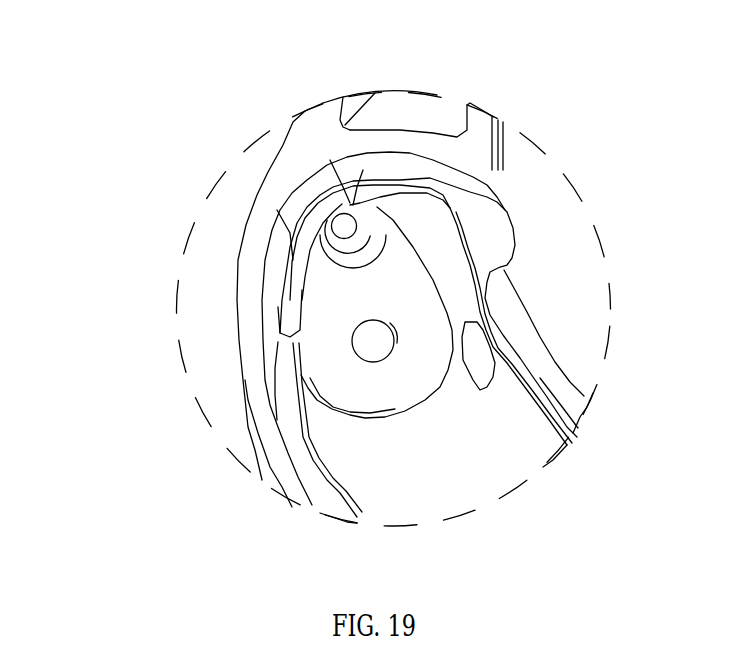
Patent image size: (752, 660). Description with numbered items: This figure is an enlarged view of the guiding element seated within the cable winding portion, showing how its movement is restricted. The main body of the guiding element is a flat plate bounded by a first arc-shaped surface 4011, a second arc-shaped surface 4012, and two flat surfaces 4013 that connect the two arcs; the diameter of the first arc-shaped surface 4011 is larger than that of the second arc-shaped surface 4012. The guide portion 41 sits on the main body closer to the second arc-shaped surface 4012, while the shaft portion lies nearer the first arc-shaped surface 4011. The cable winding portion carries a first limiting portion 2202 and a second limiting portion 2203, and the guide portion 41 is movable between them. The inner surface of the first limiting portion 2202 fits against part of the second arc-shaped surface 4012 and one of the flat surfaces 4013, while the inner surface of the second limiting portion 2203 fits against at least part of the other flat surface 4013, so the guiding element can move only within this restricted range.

The guide portion 41 is at (357, 228).
The first arc-shaped surface 4011 is at (380, 420).
The second arc-shaped surface 4012 is at (450, 145).
The flat surfaces 4013 is at (302, 297).
The first limiting portion 2202 is at (293, 267).
The second limiting portion 2203 is at (477, 350).